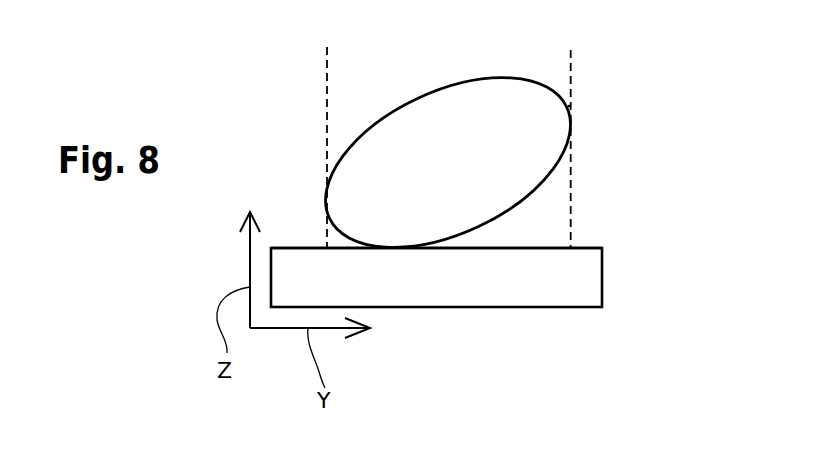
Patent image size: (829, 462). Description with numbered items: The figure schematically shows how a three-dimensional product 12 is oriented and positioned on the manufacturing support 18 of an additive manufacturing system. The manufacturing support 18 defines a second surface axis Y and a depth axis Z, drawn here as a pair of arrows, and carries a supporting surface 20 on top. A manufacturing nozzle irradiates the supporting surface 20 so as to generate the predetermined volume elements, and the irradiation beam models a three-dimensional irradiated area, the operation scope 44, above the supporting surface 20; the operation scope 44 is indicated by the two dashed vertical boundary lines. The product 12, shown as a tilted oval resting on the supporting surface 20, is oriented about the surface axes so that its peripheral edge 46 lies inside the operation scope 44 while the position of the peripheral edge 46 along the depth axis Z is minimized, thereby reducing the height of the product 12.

The product 12 is at (479, 110).
The manufacturing support 18 is at (585, 280).
The supporting surface 20 is at (539, 248).
The operation scope 44 is at (571, 70).
The peripheral edge 46 is at (569, 106).